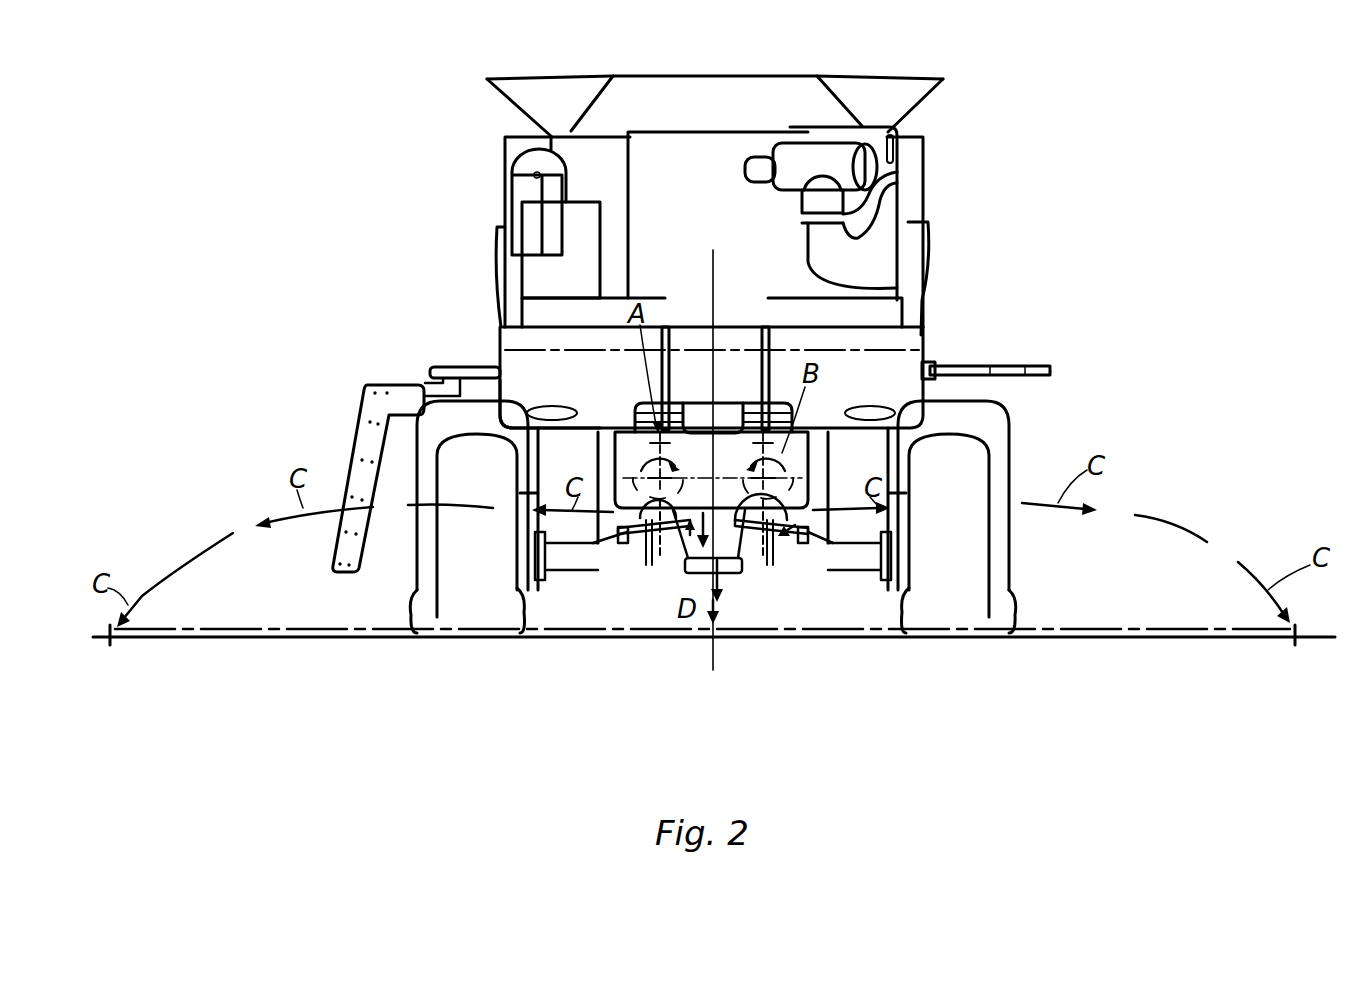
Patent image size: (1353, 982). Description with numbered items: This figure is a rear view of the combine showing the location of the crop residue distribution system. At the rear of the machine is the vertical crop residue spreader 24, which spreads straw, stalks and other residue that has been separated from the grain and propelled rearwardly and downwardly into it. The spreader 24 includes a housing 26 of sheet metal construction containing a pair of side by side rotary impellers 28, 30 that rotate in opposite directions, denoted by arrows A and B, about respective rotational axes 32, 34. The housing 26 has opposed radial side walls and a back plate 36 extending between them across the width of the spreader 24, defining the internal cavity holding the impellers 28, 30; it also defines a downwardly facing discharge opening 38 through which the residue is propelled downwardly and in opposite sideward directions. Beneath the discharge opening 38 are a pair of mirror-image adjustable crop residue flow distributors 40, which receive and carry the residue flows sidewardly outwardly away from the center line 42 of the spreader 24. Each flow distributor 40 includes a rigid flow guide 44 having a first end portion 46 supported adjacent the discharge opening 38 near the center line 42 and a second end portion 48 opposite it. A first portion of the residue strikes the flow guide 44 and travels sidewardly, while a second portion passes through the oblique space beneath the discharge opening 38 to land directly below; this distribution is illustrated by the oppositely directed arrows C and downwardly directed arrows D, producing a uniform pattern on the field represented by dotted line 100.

The vertical crop residue spreader 24 is at (987, 408).
The housing 26 is at (655, 477).
The rotary impeller 28 is at (633, 452).
The rotary impeller 30 is at (812, 447).
The rotational axis 32 is at (540, 428).
The rotational axis 34 is at (790, 470).
The back plate 36 is at (757, 402).
The discharge opening 38 is at (683, 545).
The adjustable crop residue flow distributor 40 is at (645, 535).
The center line 42 is at (714, 257).
The flow guide 44 is at (688, 537).
The first end portion 46 is at (667, 537).
The second end portion 48 is at (627, 537).
The dotted line 100 is at (1123, 625).